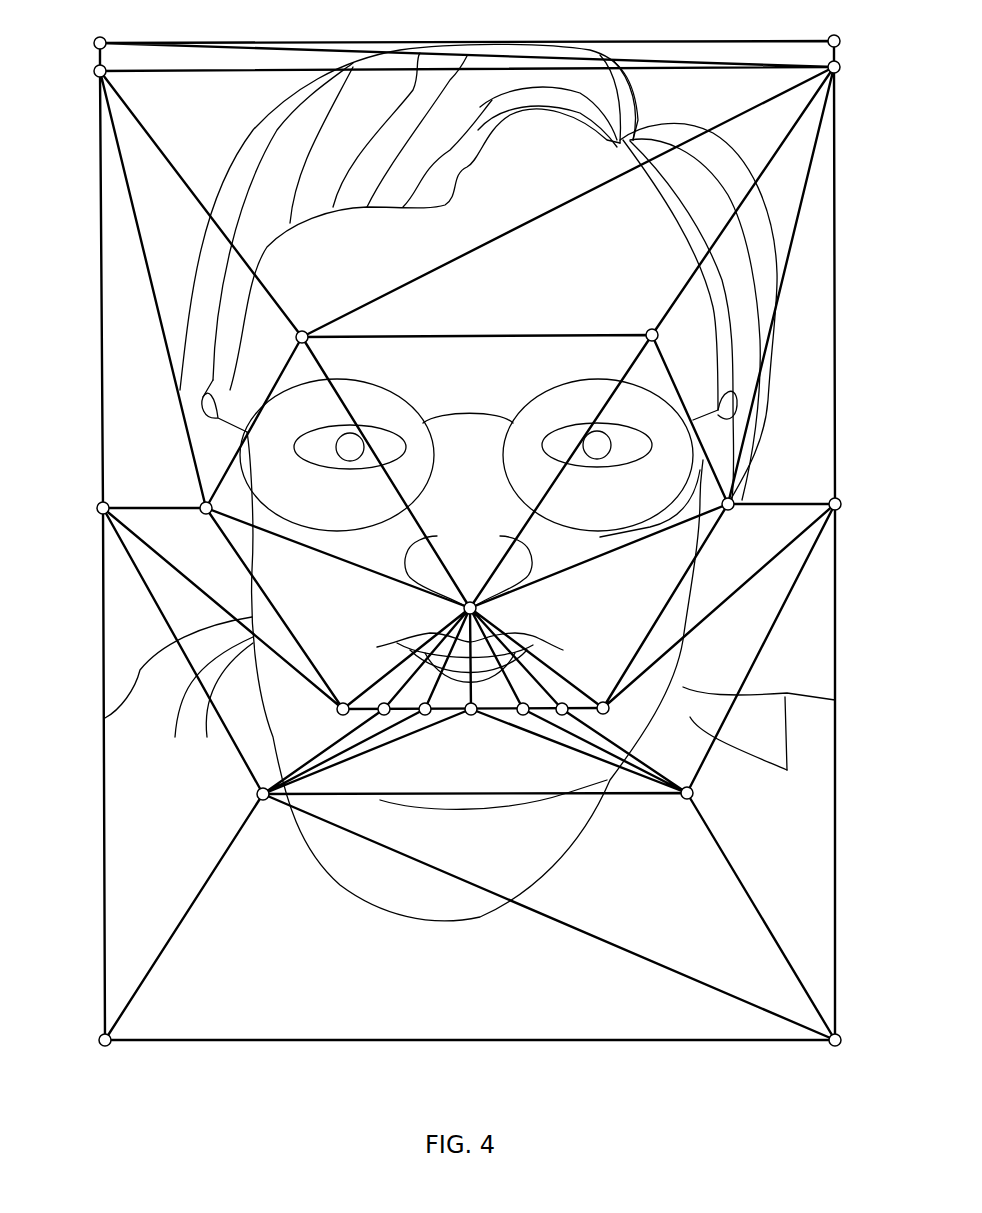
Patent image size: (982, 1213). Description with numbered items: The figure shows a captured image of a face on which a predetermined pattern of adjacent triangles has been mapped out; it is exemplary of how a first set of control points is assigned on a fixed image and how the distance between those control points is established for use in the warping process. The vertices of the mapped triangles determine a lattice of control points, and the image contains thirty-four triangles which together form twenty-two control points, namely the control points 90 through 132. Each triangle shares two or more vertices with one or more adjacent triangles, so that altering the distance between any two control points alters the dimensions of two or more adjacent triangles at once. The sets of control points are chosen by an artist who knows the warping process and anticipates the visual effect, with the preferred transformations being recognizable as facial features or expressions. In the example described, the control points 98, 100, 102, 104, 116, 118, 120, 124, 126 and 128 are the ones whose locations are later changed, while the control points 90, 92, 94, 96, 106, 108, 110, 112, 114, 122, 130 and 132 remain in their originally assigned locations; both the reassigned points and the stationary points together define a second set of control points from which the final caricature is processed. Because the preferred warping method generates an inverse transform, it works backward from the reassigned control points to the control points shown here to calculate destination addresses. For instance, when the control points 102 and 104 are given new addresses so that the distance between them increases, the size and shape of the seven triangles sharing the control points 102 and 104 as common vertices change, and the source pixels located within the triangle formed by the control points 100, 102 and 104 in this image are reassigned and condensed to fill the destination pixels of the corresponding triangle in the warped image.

The control point 90 is at (100, 36).
The control point 92 is at (834, 34).
The control point 94 is at (841, 1042).
The control point 96 is at (100, 1044).
The control point 98 is at (94, 71).
The control point 100 is at (840, 67).
The control point 102 is at (302, 331).
The control point 104 is at (647, 331).
The control point 106 is at (97, 508).
The control point 108 is at (201, 504).
The control point 110 is at (733, 500).
The control point 112 is at (841, 504).
The control point 114 is at (477, 608).
The control point 116 is at (337, 711).
The control point 118 is at (383, 702).
The control point 120 is at (424, 716).
The control point 122 is at (471, 716).
The control point 124 is at (523, 716).
The control point 126 is at (565, 702).
The control point 128 is at (610, 708).
The control point 130 is at (257, 794).
The control point 132 is at (693, 793).